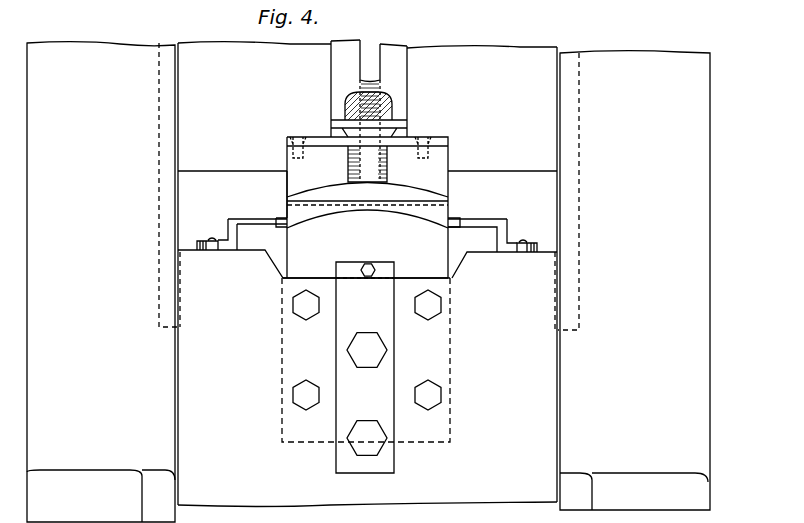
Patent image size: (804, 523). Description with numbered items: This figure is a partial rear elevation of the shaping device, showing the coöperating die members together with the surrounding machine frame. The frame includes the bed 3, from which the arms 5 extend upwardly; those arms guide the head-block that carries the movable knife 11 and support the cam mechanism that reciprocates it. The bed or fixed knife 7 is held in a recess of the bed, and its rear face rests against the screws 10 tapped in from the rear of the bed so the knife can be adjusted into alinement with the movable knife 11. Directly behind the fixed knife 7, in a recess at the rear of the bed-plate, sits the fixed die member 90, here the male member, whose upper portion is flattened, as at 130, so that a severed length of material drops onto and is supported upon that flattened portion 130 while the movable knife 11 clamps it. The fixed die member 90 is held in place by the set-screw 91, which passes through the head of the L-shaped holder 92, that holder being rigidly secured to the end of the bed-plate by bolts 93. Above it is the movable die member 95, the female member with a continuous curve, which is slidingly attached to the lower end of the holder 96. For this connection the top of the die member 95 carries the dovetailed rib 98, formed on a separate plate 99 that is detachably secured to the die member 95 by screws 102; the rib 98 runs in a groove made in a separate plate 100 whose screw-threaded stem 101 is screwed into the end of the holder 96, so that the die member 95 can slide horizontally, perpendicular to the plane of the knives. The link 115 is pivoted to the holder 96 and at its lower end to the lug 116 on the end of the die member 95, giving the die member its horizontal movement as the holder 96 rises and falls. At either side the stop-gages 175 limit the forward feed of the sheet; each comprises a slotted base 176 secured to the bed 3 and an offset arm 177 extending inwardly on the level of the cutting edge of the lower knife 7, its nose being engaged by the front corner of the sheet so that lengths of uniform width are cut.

The bed 3 is at (367, 274).
The arms 5 is at (368, 282).
The bed or fixed knife 7 is at (452, 246).
The screws 10 is at (298, 380).
The movable knife 11 is at (285, 182).
The fixed die member 90 is at (313, 243).
The set-screw 91 is at (375, 266).
The L-shaped holder 92 is at (365, 367).
The bolts 93 is at (362, 428).
The movable die member 95 is at (435, 172).
The holder 96 is at (331, 64).
The dovetailed rib 98 is at (390, 135).
The plate 99 is at (318, 137).
The plate 100 is at (338, 120).
The screw-threaded stem 101 is at (390, 100).
The screws 102 is at (287, 148).
The link 115 is at (377, 48).
The lug 116 is at (346, 182).
The flattened portion 130 is at (362, 211).
The stop-gages 175 is at (232, 232).
The slotted base 176 is at (215, 250).
The offset arm 177 is at (252, 222).